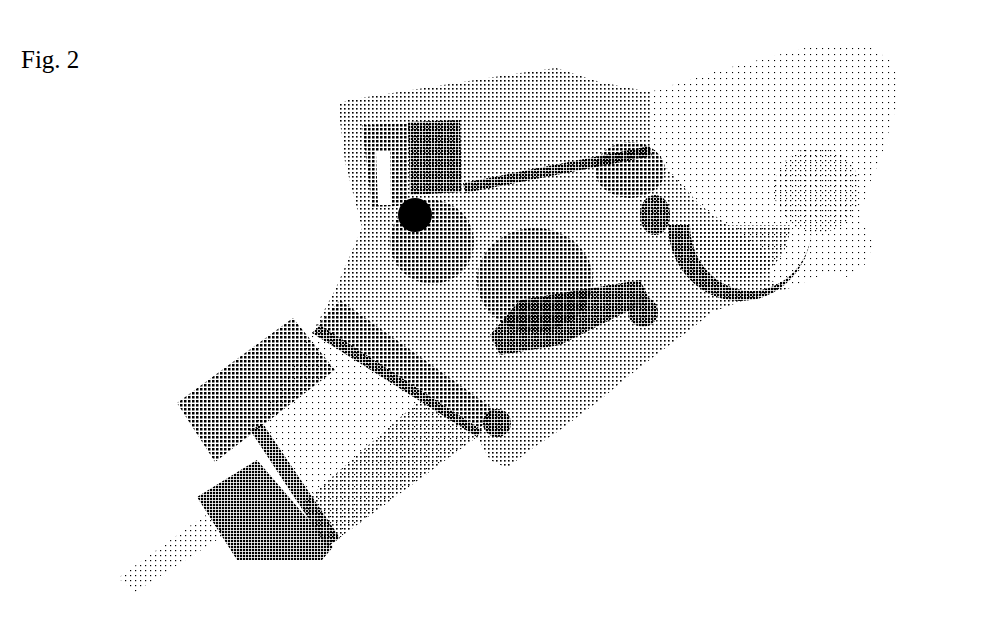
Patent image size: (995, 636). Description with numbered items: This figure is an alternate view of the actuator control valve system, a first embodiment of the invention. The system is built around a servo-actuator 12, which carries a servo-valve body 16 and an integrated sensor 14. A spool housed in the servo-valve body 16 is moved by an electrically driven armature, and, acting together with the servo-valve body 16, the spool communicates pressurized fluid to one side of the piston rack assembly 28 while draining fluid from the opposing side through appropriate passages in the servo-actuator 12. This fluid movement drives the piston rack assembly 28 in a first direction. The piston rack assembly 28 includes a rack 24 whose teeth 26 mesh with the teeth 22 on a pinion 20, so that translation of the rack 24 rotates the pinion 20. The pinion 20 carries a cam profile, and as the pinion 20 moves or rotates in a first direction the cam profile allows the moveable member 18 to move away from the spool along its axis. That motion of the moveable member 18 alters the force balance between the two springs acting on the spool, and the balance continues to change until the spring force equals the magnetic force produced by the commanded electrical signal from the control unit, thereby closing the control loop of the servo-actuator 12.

The servo-actuator 12 is at (378, 460).
The integrated sensor 14 is at (185, 495).
The servo-valve body 16 is at (503, 360).
The moveable member 18 is at (648, 213).
The pinion 20 is at (723, 243).
The teeth 22 is at (675, 143).
The rack 24 is at (527, 157).
The teeth 26 is at (631, 160).
The piston rack assembly 28 is at (435, 133).